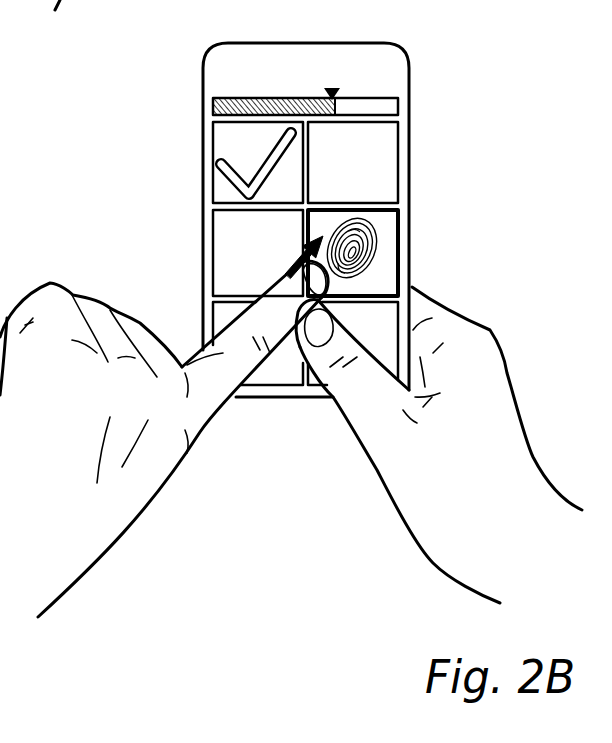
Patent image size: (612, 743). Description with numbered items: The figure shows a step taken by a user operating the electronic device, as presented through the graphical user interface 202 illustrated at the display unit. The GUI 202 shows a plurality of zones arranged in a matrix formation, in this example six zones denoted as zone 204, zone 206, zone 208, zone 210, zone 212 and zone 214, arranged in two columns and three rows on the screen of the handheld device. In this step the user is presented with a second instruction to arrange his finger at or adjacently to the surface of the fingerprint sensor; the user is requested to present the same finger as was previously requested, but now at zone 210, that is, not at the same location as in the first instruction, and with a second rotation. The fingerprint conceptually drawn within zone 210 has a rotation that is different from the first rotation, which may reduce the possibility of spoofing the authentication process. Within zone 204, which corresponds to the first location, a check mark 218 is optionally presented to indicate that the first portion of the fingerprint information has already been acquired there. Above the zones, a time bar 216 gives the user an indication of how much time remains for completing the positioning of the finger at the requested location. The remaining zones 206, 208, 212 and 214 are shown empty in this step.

The graphical user interface 202 is at (403, 85).
The zone 204 is at (222, 132).
The zone 206 is at (373, 157).
The zone 208 is at (223, 253).
The zone 210 is at (380, 277).
The zone 212 is at (263, 383).
The zone 214 is at (317, 380).
The time bar 216 is at (360, 107).
The check mark 218 is at (219, 172).